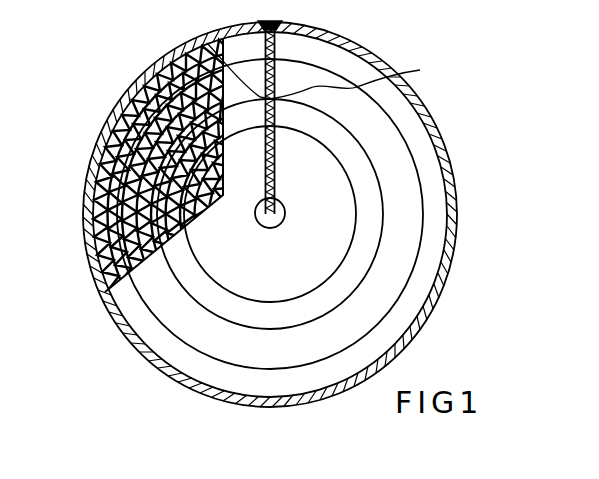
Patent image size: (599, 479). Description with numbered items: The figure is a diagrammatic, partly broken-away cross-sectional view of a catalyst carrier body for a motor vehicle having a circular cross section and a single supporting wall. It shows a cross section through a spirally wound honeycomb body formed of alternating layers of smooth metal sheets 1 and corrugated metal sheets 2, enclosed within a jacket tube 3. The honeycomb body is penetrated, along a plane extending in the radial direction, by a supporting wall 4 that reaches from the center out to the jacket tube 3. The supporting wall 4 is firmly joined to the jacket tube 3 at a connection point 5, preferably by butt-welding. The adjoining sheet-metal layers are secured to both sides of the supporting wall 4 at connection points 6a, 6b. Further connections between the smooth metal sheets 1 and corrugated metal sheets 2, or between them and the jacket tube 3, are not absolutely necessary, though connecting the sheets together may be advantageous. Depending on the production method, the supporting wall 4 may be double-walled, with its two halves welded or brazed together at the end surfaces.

The smooth metal sheets 1 is at (126, 118).
The corrugated metal sheets 2 is at (108, 158).
The jacket tube 3 is at (452, 182).
The supporting wall 4 is at (276, 165).
The connection point 5 is at (274, 22).
The connection point 6a is at (207, 43).
The connection point 6b is at (361, 78).